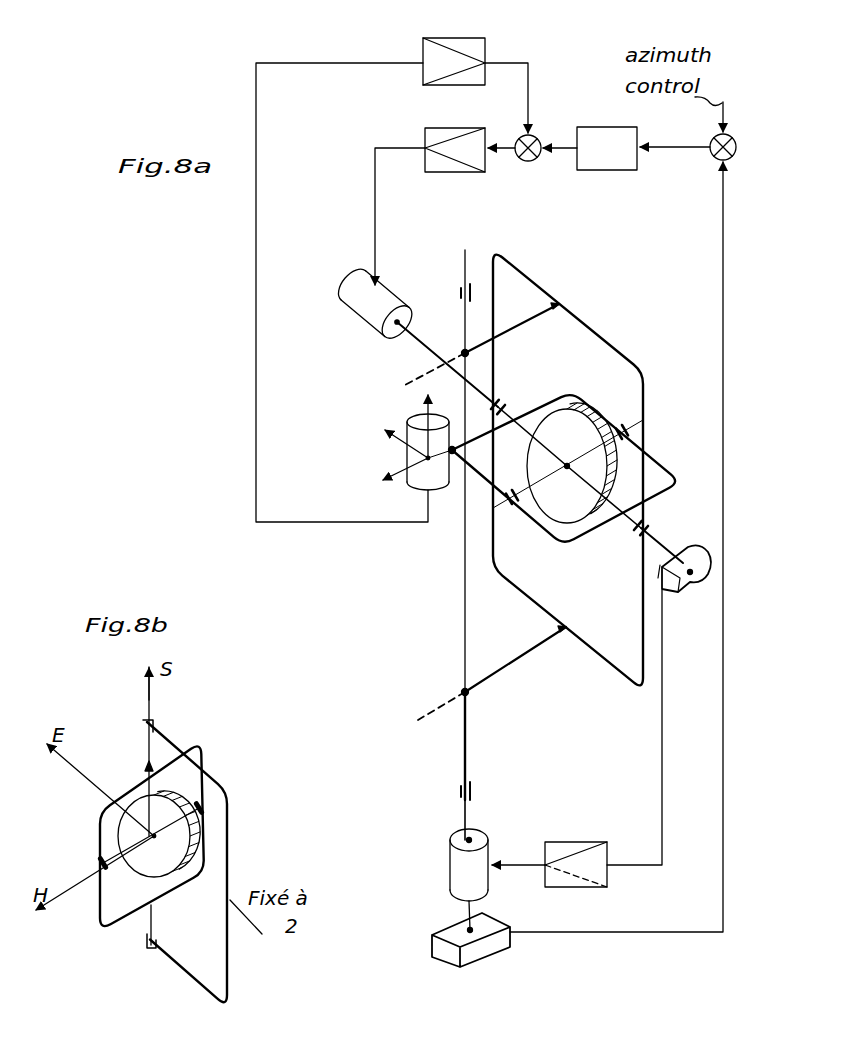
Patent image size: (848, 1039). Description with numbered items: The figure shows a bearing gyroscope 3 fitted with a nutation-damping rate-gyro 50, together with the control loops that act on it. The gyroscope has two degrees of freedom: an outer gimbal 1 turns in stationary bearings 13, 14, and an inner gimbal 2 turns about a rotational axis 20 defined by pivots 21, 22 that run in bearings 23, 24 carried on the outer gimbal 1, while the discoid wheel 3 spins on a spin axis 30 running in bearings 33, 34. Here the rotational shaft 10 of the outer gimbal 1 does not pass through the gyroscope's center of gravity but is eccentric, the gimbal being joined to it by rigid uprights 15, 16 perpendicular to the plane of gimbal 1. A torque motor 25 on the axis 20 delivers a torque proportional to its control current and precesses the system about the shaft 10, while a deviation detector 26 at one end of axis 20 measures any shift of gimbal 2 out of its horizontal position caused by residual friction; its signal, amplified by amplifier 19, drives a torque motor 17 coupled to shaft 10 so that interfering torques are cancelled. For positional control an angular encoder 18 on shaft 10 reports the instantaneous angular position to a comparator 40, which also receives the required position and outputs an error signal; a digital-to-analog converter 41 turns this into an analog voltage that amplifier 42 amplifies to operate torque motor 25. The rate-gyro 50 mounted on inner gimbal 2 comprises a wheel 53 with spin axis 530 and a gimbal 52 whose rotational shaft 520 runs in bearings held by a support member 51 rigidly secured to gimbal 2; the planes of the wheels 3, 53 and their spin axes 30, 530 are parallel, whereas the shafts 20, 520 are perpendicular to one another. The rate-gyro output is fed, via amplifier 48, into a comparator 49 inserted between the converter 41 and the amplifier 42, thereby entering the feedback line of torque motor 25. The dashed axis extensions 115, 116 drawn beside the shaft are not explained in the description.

In FIG. 8A, the outer gimbal 1 is at (584, 326).
In FIG. 8A, the inner gimbal 2 is at (660, 457).
In FIG. 8A, the discoid wheel 3 is at (574, 451).
In FIG. 8A, the rotational shaft of outer gimbal 10 is at (462, 560).
In FIG. 8A, the stationary bearing 13 is at (457, 793).
In FIG. 8A, the stationary bearing 14 is at (457, 294).
In FIG. 8A, the upright 15 is at (522, 656).
In FIG. 8A, the upright 16 is at (527, 322).
In FIG. 8A, the torque motor 17 is at (449, 864).
In FIG. 8A, the angular encoder 18 is at (486, 953).
In FIG. 8A, the amplifier 19 is at (596, 829).
In FIG. 8A, the rotational axis of inner gimbal 20 is at (525, 430).
In FIG. 8A, the pivot 21 is at (420, 346).
In FIG. 8A, the pivot 22 is at (656, 536).
In FIG. 8A, the bearing 23 is at (498, 402).
In FIG. 8A, the bearing 24 is at (638, 538).
In FIG. 8A, the torque motor 25 is at (356, 286).
In FIG. 8A, the deviation detector 26 is at (684, 583).
In FIG. 8A, the spin axis 30 is at (525, 487).
In FIG. 8A, the bearing 33 is at (524, 508).
In FIG. 8A, the bearing 34 is at (630, 412).
In FIG. 8A, the comparator 40 is at (711, 158).
In FIG. 8A, the digital-to-analog converter 41 is at (607, 148).
In FIG. 8A, the amplifier 42 is at (468, 128).
In FIG. 8A, the amplifier 48 is at (472, 38).
In FIG. 8A, the comparator 49 is at (536, 160).
In FIG. 8A, the rate-gyro 50 is at (438, 482).
In FIG. 8B, the support member 51 is at (228, 828).
In FIG. 8B, the gimbal of rate-gyro 52 is at (100, 900).
In FIG. 8B, the wheel of rate-gyro 53 is at (166, 793).
In FIG. 8A, the lower axis extension 115 is at (428, 690).
In FIG. 8A, the upper axis extension 116 is at (406, 385).
In FIG. 8B, the rotational shaft of rate-gyro gimbal 520 is at (147, 742).
In FIG. 8B, the spin axis of rate-gyro wheel 530 is at (122, 864).